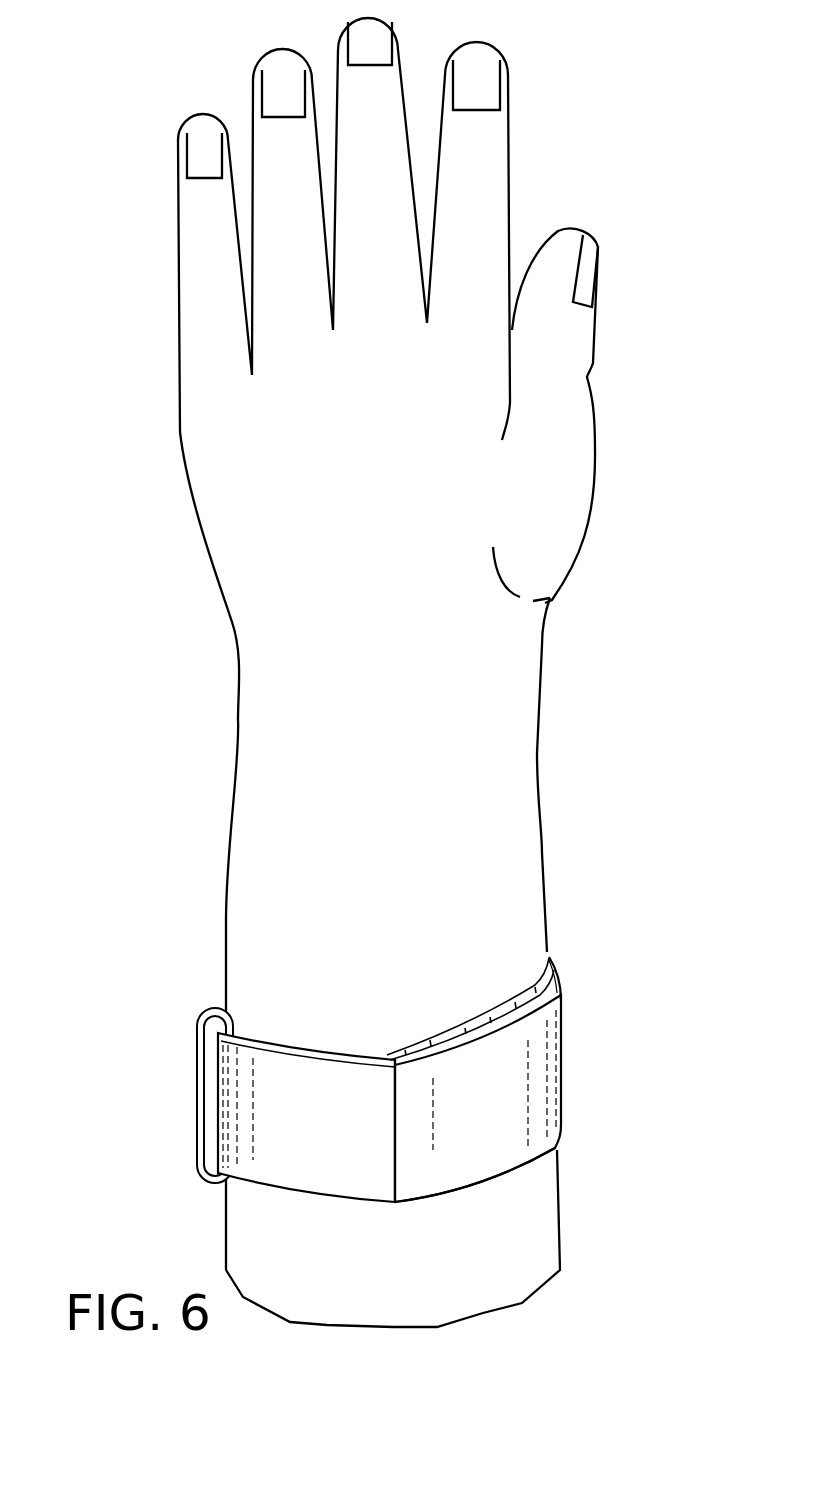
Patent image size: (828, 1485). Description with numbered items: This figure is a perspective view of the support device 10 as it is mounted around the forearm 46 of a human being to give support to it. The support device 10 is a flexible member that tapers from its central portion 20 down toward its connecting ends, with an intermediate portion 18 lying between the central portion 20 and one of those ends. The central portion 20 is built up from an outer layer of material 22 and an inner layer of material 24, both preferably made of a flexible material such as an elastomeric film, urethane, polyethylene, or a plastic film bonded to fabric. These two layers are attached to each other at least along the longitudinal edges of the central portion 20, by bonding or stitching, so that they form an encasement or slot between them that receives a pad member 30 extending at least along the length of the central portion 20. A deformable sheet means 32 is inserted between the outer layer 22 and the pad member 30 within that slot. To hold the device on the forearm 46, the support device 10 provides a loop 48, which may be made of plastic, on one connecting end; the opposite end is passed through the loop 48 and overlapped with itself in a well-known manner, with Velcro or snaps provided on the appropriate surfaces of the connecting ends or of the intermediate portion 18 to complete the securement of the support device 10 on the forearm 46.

The support device 10 is at (409, 1074).
The intermediate portion 18 is at (335, 1132).
The central portion 20 is at (510, 1122).
The outer layer of material 22 is at (562, 1138).
The inner layer of material 24 is at (400, 1053).
The pad member 30 is at (503, 1000).
The deformable sheet means 32 is at (557, 999).
The forearm 46 is at (513, 883).
The loop 48 is at (197, 1037).